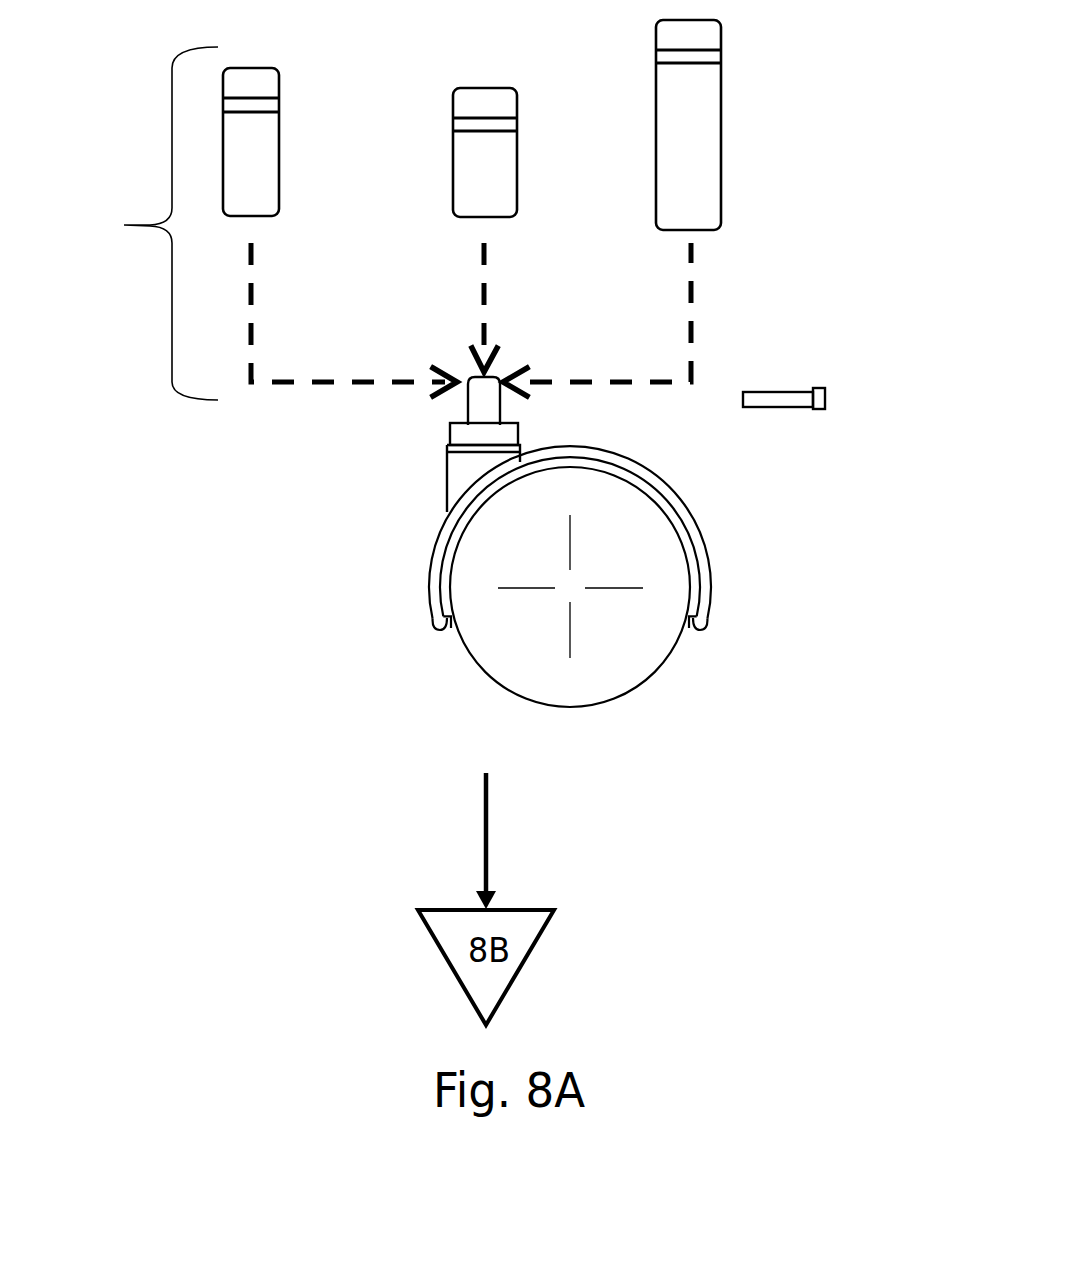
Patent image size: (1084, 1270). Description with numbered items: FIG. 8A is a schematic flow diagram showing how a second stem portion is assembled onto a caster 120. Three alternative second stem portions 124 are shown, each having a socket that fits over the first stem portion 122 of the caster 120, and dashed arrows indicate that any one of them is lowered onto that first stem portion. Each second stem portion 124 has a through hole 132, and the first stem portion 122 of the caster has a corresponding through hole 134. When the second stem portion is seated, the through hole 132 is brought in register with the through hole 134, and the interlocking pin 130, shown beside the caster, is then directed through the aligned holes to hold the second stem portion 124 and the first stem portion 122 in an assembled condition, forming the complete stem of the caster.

The caster 120 is at (578, 705).
The first stem portion 122 is at (468, 406).
The second stem portion 124 is at (145, 223).
The interlocking pin 130 is at (822, 388).
The through hole in the second stem portion 132 is at (254, 187).
The through hole in the first stem portion 134 is at (481, 404).